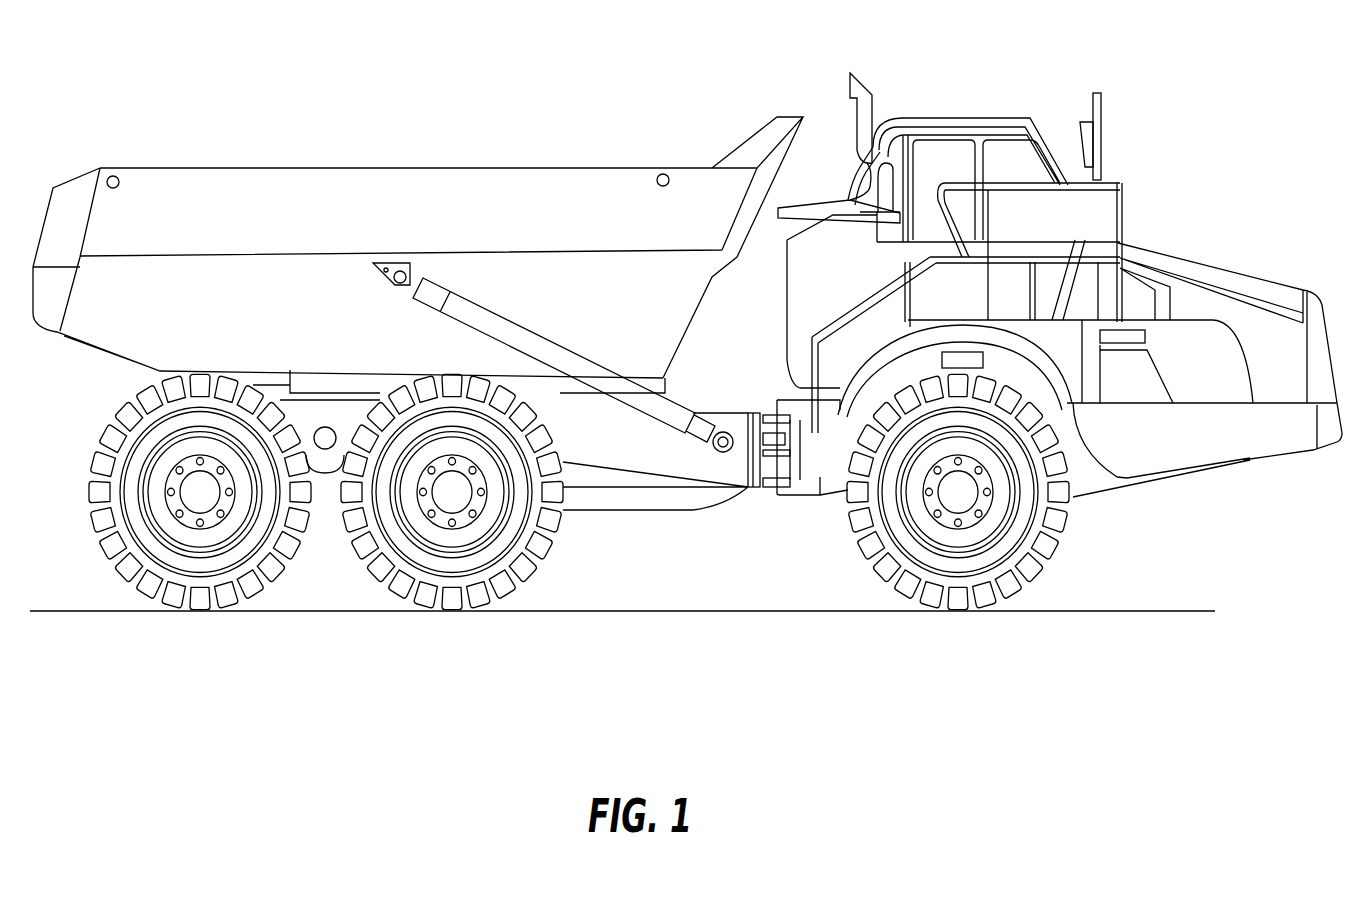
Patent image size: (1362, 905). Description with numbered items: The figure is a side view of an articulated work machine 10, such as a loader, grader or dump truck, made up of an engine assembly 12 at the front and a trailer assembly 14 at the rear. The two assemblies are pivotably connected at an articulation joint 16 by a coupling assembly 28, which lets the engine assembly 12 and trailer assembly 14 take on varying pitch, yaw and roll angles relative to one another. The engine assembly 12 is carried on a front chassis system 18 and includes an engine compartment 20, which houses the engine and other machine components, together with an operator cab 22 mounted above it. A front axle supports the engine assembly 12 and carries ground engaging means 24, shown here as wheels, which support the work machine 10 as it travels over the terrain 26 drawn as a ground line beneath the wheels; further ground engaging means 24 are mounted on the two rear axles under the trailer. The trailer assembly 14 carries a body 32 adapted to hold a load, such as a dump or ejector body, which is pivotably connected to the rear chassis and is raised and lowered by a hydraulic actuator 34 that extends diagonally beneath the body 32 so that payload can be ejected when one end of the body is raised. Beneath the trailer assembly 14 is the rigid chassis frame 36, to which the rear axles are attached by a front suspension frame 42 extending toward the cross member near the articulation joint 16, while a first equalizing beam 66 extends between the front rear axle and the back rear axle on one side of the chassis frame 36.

The work machine 10 is at (595, 106).
The engine assembly 12 is at (1202, 219).
The trailer assembly 14 is at (205, 156).
The articulation joint 16 is at (763, 502).
The front chassis system 18 is at (1087, 475).
The engine compartment 20 is at (1288, 392).
The operator cab 22 is at (969, 118).
The ground engaging means 24 is at (128, 555).
The terrain 26 is at (1175, 608).
The coupling assembly 28 is at (800, 487).
The body 32 is at (388, 180).
The hydraulic actuator 34 is at (667, 410).
The chassis frame 36 is at (677, 458).
The front suspension frame 42 is at (612, 500).
The first equalizing beam 66 is at (325, 470).